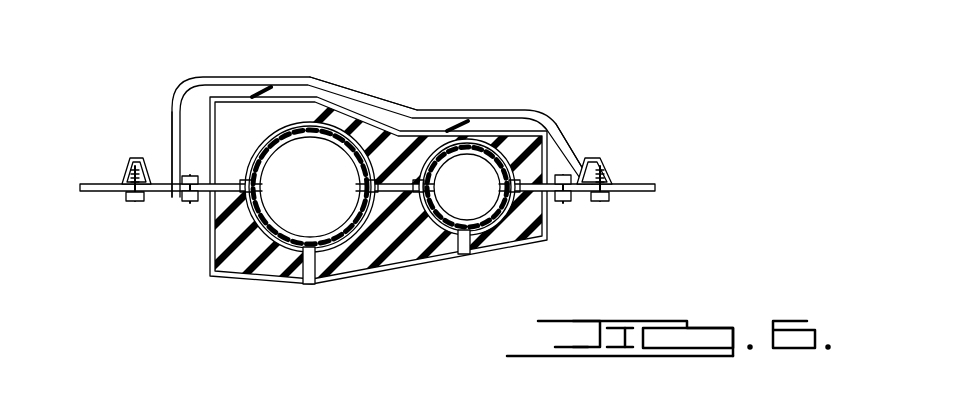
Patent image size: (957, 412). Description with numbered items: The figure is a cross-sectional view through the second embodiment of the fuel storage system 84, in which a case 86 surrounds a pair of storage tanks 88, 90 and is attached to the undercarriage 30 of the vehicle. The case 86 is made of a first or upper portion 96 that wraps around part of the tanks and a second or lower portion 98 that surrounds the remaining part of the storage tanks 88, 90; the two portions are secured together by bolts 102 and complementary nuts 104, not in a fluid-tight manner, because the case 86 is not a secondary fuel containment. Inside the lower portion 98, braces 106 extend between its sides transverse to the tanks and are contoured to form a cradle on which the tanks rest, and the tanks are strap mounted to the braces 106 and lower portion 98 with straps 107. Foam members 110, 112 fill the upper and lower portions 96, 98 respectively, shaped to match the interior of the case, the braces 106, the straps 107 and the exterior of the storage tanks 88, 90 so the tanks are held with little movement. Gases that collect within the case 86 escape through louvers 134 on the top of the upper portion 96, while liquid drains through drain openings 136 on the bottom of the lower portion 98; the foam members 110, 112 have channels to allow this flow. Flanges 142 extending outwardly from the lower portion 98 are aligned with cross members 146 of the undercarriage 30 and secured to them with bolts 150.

The undercarriage 30 is at (388, 100).
The fuel storage system 84 is at (550, 60).
The case 86 is at (580, 268).
The storage tank 88 is at (483, 198).
The storage tank 90 is at (326, 197).
The upper portion 96 is at (210, 127).
The lower portion 98 is at (212, 277).
The bolt 102 is at (572, 152).
The nut 104 is at (600, 205).
The brace 106 is at (358, 268).
The strap 107 is at (450, 128).
The foam member 110 is at (310, 95).
The foam member 112 is at (410, 247).
The louver 134 is at (255, 92).
The drain opening 136 is at (312, 286).
The flange 142 is at (158, 198).
The cross member 146 is at (126, 160).
The bolt 150 is at (625, 185).